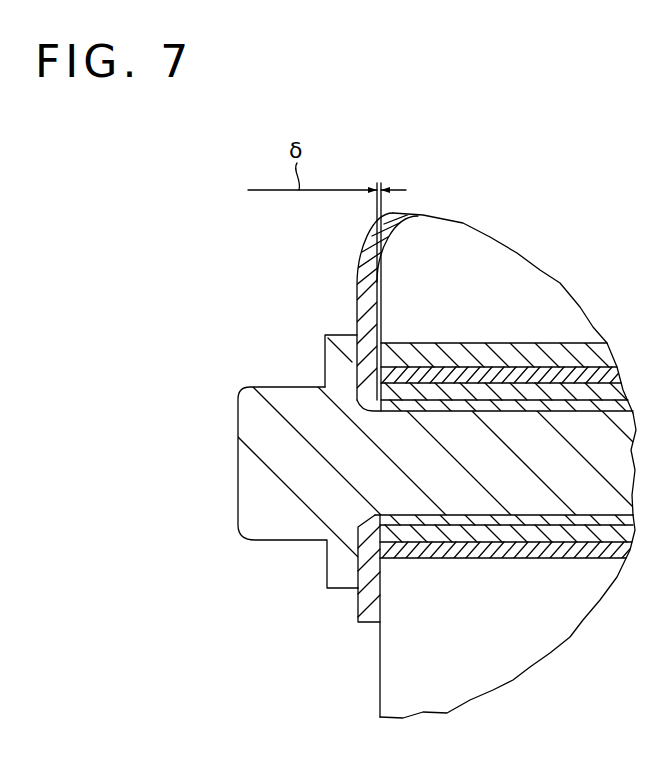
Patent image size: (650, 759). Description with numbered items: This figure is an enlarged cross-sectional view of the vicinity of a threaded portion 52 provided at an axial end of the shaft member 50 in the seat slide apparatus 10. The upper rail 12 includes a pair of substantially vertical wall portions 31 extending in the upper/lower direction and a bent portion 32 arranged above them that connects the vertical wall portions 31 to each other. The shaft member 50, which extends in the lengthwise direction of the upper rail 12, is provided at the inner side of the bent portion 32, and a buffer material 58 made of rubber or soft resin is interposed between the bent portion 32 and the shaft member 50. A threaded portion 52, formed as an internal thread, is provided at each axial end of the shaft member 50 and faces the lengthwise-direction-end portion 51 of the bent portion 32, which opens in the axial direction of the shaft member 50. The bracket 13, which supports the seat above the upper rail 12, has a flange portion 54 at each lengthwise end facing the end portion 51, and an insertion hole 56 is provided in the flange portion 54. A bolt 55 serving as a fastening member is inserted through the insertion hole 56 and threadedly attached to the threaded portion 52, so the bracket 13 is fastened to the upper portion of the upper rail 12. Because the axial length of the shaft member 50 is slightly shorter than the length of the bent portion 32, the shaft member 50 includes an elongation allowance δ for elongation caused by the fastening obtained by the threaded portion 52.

The seat slide apparatus 10 is at (133, 218).
The upper rail 12 is at (380, 671).
The bracket 13 is at (357, 287).
The vertical wall portion 31 is at (523, 663).
The bent portion 32 is at (470, 345).
The shaft member 50 is at (505, 570).
The lengthwise-direction-end portion 51 is at (340, 363).
The threaded portion 52 is at (540, 559).
The flange portion 54 is at (358, 604).
The bolt 55 is at (238, 457).
The insertion hole 56 is at (397, 560).
The buffer material 58 is at (540, 352).